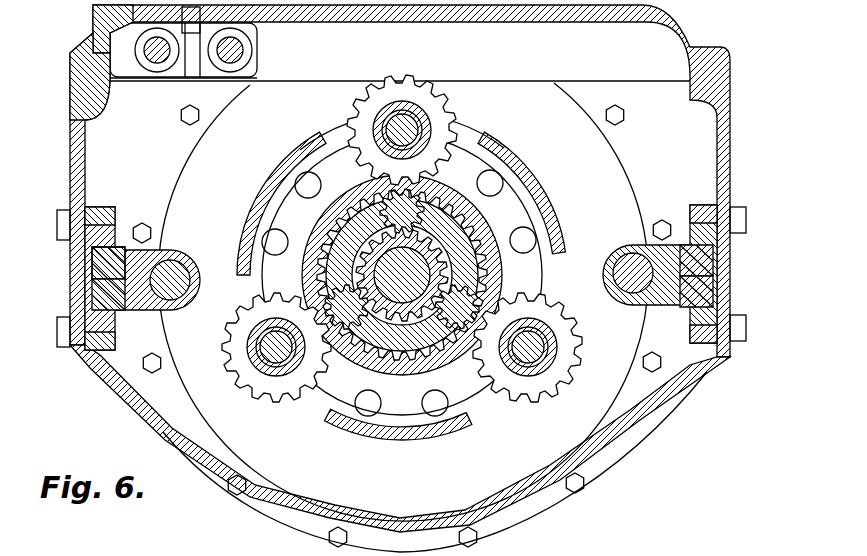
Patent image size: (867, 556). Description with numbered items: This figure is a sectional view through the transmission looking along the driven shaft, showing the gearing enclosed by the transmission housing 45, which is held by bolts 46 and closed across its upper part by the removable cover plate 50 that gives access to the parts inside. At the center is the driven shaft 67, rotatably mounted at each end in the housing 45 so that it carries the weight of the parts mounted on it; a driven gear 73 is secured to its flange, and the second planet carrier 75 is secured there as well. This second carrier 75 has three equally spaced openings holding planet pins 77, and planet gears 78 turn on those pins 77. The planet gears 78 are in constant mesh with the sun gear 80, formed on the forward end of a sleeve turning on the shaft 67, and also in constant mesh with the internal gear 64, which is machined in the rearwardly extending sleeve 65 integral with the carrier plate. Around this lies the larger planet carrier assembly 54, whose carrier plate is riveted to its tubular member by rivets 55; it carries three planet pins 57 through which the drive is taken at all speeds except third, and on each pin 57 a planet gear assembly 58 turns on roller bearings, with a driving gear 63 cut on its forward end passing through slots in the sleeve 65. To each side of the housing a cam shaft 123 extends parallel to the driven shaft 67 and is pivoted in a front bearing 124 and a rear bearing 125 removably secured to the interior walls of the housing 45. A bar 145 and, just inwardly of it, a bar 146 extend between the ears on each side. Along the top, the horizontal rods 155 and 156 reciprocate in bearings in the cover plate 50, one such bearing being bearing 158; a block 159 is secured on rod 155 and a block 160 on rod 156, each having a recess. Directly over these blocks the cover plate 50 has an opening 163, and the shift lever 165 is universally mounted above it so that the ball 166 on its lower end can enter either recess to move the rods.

The transmission housing 45 is at (731, 165).
The bolts 46 is at (624, 116).
The removable cover plate 50 is at (392, 41).
The planet carrier assembly 54 is at (263, 181).
The rivets 55 is at (570, 234).
The planet pins 57 is at (412, 128).
The planet gear assembly 58 is at (378, 140).
The driving gear 63 is at (448, 150).
The internal gear 64 is at (520, 170).
The sleeve 65 is at (477, 400).
The driven shaft 67 is at (424, 398).
The driven gear 73 is at (490, 158).
The second planet carrier 75 is at (540, 222).
The planet pins 77 is at (313, 148).
The planet gears 78 is at (340, 210).
The sun gear 80 is at (400, 440).
The cam shafts 123 is at (100, 294).
The front bearings 124 is at (160, 250).
The rear bearings 125 is at (172, 281).
The bar 145 is at (92, 255).
The bars 146 is at (92, 272).
The rod 155 is at (153, 63).
The rod 156 is at (243, 50).
The bearing 158 is at (123, 62).
The block 159 is at (174, 58).
The block 160 is at (256, 66).
The opening 163 is at (134, 14).
The shift lever 165 is at (200, 15).
The ball 166 is at (248, 86).